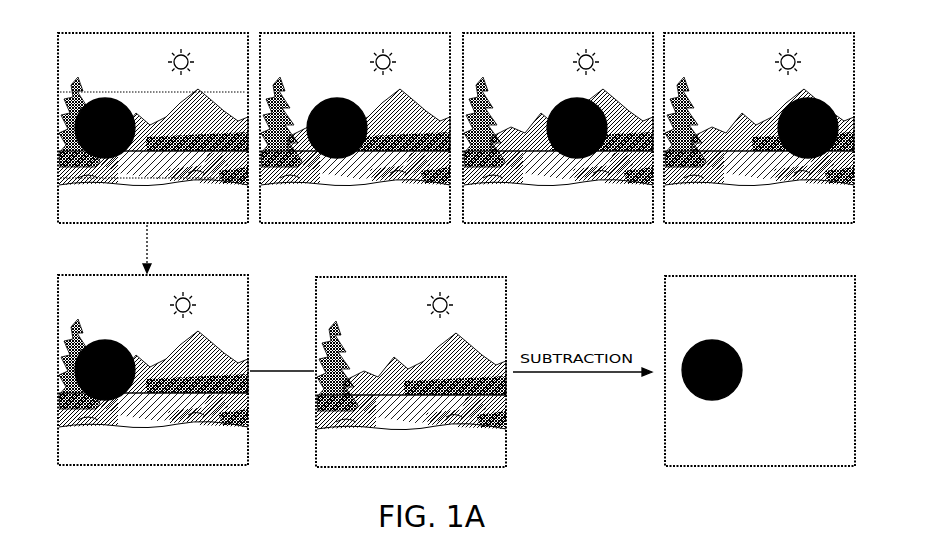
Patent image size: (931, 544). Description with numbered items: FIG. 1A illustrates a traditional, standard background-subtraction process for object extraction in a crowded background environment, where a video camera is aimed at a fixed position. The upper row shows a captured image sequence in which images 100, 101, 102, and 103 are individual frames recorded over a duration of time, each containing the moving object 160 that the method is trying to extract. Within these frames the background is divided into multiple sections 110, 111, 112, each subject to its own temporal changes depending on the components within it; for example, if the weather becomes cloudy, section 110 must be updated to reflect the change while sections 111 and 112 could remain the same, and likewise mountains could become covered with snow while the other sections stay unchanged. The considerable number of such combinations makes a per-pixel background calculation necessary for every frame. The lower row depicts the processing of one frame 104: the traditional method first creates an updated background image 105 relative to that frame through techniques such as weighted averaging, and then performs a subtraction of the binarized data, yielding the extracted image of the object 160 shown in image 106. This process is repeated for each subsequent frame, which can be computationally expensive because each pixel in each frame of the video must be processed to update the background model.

The image frame 100 is at (132, 119).
The image frame 101 is at (355, 119).
The image frame 102 is at (558, 119).
The image frame 103 is at (759, 119).
The frame 104 is at (153, 363).
The updated background image 105 is at (411, 364).
The extracted image 106 is at (760, 363).
The background section 110 is at (137, 70).
The background section 111 is at (138, 131).
The background section 112 is at (137, 190).
The moving object 160 is at (78, 113).